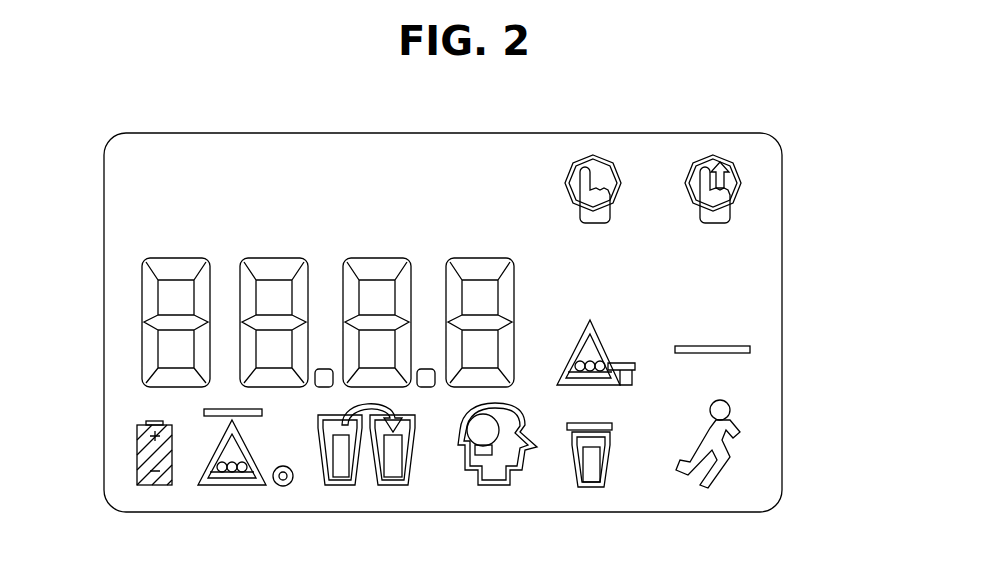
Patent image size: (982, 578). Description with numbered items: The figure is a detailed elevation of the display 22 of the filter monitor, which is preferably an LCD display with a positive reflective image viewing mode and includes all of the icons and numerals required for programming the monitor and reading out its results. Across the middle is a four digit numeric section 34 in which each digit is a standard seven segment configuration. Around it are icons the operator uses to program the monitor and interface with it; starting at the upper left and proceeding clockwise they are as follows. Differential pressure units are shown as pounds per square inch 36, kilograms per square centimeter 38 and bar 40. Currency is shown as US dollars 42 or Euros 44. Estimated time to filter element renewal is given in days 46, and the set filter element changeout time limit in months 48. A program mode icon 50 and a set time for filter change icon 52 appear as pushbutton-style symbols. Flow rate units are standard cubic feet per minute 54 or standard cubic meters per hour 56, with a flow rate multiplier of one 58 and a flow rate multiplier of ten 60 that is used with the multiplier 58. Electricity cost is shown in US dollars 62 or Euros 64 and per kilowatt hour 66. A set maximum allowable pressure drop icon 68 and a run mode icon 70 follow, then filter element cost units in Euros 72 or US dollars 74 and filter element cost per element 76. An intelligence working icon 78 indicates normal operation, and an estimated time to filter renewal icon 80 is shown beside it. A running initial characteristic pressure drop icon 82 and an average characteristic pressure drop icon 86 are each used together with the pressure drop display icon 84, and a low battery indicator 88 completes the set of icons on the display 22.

The LCD display 22 is at (772, 148).
The four digit numeric section 34 is at (150, 322).
The differential pressure units icon (pounds per square inch) 36 is at (148, 222).
The differential pressure units icon (kilograms per square centimeter) 38 is at (205, 160).
The differential pressure units icon (bar) 40 is at (298, 205).
The currency icon (US dollars) 42 is at (362, 160).
The currency icon (Euros) 44 is at (405, 160).
The estimated time to filter element renewal icon (days) 46 is at (470, 160).
The set filter element changeout time limit icon (months) 48 is at (490, 217).
The program mode icon 50 is at (583, 157).
The set time for filter change icon 52 is at (710, 157).
The flow rate units icon (standard cubic feet per minute) 54 is at (627, 232).
The flow rate units icon (standard cubic meters per hour) 56 is at (632, 296).
The flow rate multiplier icon (X1) 58 is at (710, 250).
The flow rate multiplier icon (X10) 60 is at (745, 265).
The electricity cost icon (US dollars) 62 is at (692, 309).
The electricity cost icon (Euros) 64 is at (745, 322).
The electricity cost icon (per kilowatt hour) 66 is at (752, 360).
The set maximum allowable pressure drop icon 68 is at (620, 388).
The run mode icon 70 is at (740, 433).
The filter element cost units icon (Euros) 72 is at (614, 407).
The filter element cost units icon (US dollars) 74 is at (568, 410).
The filter element cost icon (per element) 76 is at (590, 478).
The intelligence working icon 78 is at (488, 462).
The estimated time to filter renewal icon 80 is at (355, 487).
The running initial characteristic pressure drop icon 82 is at (283, 487).
The pressure drop display icon 84 is at (213, 487).
The average characteristic pressure drop icon 86 is at (204, 416).
The low battery indicator 88 is at (137, 456).